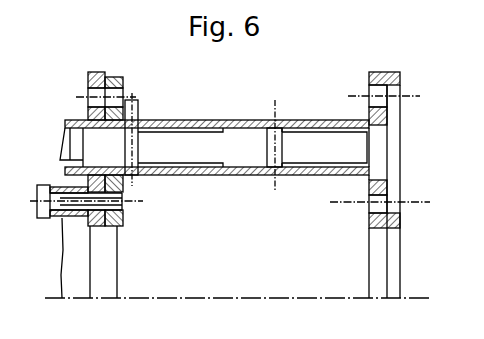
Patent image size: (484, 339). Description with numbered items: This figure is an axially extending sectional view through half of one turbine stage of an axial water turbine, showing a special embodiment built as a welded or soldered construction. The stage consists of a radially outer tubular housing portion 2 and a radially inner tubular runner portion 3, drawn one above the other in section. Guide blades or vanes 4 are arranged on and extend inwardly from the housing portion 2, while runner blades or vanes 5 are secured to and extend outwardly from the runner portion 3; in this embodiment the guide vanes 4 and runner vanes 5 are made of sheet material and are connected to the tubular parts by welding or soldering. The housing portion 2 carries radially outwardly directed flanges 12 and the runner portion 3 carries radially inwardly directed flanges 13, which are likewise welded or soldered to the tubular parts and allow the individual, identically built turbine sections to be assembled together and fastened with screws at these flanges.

The housing portion 2 is at (302, 120).
The runner portion 3 is at (247, 172).
The guide blades or vanes 4 is at (197, 155).
The runner blades or vanes 5 is at (323, 150).
The radially outwardly directed flanges 12 is at (110, 70).
The radially inwardly directed flanges 13 is at (117, 230).